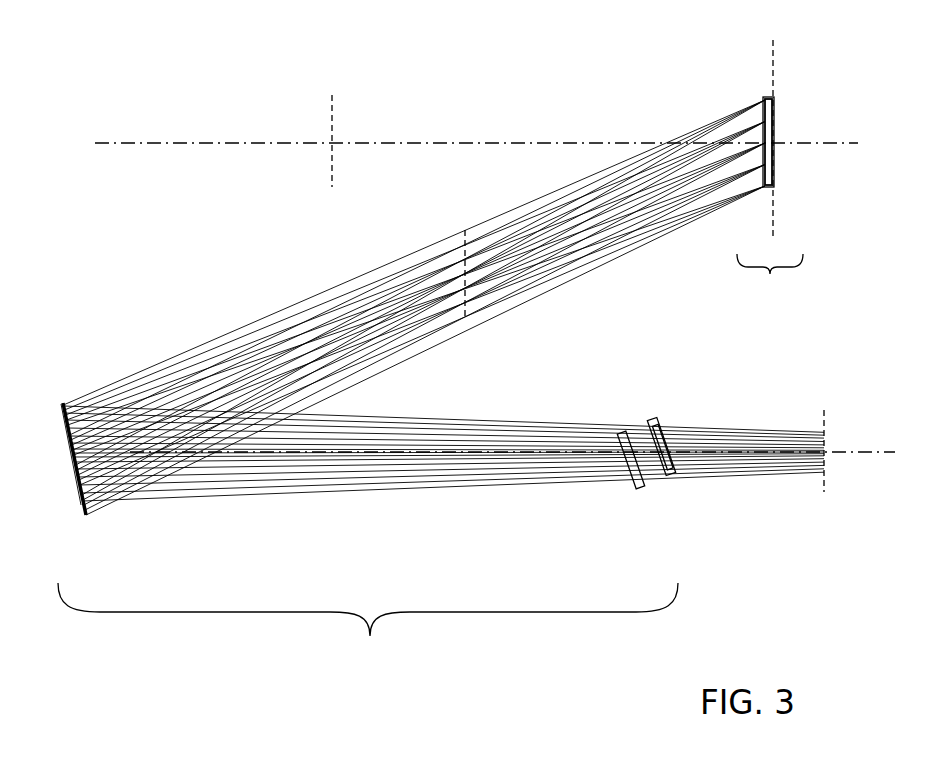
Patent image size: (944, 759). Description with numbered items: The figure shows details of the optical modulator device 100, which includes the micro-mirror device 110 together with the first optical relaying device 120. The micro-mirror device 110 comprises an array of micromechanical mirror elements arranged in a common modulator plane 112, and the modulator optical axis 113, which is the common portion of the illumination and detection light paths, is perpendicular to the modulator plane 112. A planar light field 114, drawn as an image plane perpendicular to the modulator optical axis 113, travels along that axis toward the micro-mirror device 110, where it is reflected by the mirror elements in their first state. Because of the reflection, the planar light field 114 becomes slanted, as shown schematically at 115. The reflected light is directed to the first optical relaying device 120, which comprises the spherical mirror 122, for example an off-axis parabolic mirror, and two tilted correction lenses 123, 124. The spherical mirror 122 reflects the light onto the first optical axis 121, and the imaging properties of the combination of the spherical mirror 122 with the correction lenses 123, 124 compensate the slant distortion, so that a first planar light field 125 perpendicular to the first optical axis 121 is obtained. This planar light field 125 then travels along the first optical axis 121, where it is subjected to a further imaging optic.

The optical modulator device 100 is at (157, 107).
The micro-mirror device 110 is at (791, 308).
The modulator plane 112 is at (773, 52).
The modulator optical axis 113 is at (205, 145).
The planar light field 114 is at (332, 160).
The slanted light field 115 is at (462, 272).
The first optical relaying device 120 is at (385, 673).
The first optical axis 121 is at (877, 453).
The spherical mirror 122 is at (86, 512).
The tilted correction lens 123 is at (634, 488).
The tilted correction lens 124 is at (650, 418).
The first planar light field 125 is at (824, 422).